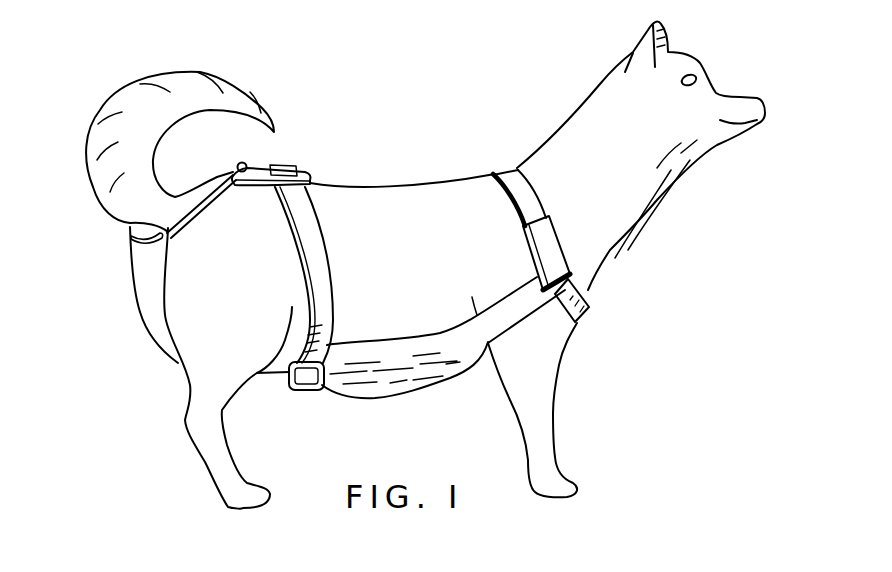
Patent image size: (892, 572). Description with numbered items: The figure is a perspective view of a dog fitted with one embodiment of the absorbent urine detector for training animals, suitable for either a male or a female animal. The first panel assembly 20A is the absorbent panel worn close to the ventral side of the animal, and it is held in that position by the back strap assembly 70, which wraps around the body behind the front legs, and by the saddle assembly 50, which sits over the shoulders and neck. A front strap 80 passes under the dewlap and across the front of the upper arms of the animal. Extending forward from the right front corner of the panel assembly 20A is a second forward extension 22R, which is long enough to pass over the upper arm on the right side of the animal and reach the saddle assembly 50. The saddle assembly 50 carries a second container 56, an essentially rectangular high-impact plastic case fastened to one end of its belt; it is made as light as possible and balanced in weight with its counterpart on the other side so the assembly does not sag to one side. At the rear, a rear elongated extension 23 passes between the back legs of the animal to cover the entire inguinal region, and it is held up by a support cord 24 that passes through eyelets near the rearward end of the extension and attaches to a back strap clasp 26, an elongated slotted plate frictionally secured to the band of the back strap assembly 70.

The first panel assembly 20A is at (399, 276).
The second forward extension 22R is at (510, 285).
The rear elongated extension 23 is at (140, 303).
The support cord 24 is at (193, 217).
The back strap clasp 26 is at (300, 164).
The saddle assembly 50 is at (498, 158).
The second container 56 is at (550, 213).
The back strap assembly 70 is at (329, 230).
The front strap 80 is at (588, 313).